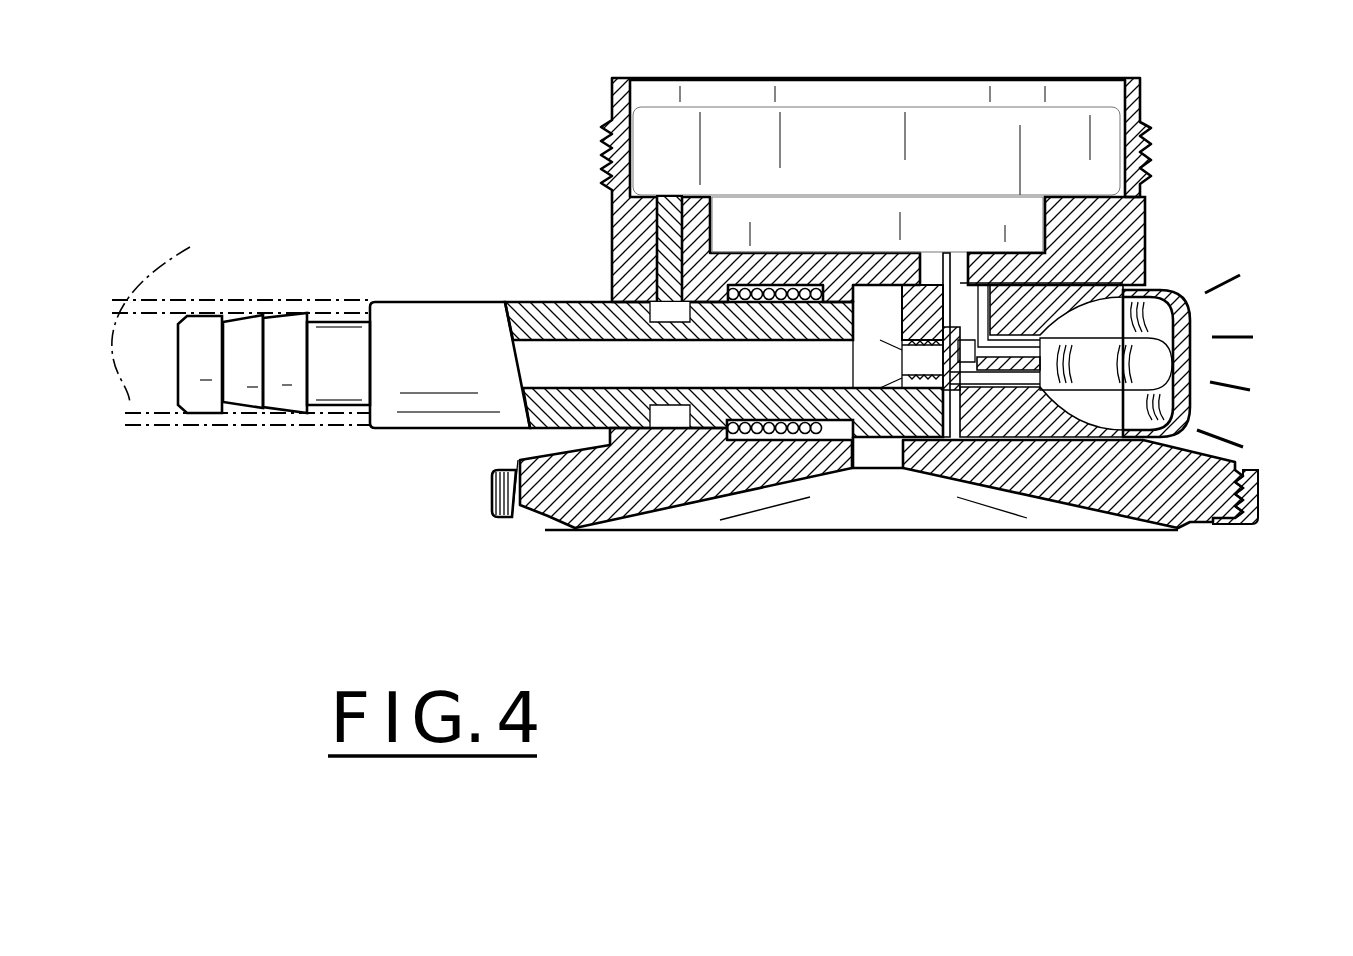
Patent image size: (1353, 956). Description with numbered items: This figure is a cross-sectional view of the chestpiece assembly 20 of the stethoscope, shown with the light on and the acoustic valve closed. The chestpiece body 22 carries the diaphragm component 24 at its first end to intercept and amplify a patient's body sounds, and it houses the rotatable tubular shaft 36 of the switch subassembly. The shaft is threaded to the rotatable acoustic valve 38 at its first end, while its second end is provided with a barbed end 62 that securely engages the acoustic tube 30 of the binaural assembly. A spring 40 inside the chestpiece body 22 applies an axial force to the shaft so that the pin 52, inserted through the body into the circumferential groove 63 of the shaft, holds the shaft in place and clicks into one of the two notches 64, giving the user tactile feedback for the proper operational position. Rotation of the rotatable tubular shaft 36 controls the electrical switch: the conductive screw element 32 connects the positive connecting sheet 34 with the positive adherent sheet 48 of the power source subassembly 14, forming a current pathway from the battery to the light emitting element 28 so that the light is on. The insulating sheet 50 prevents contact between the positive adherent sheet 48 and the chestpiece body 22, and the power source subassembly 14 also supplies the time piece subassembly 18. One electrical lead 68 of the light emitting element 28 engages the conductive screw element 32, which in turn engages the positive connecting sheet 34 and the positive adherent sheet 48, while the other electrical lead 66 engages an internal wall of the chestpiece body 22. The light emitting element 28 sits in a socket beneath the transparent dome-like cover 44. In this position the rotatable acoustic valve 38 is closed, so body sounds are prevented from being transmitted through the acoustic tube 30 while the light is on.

The power source subassembly 14 is at (1144, 114).
The time piece subassembly 18 is at (665, 140).
The chestpiece assembly 20 is at (381, 176).
The chestpiece body 22 is at (520, 518).
The diaphragm component 24 is at (860, 502).
The light emitting element 28 is at (1140, 352).
The acoustic tube 30 is at (160, 386).
The conductive screw element 32 is at (950, 392).
The positive connecting sheet 34 is at (1060, 234).
The rotatable tubular shaft 36 is at (596, 360).
The rotatable acoustic valve 38 is at (870, 303).
The spring 40 is at (733, 440).
The transparent dome-like cover 44 is at (1190, 428).
The positive adherent sheet 48 is at (948, 293).
The insulating sheet 50 is at (770, 242).
The pin 52 is at (662, 234).
The barbed end 62 is at (250, 372).
The circumferential groove 63 is at (687, 432).
The notches 64 is at (690, 416).
The electrical lead 66 is at (1022, 352).
The electrical lead 68 is at (1027, 380).